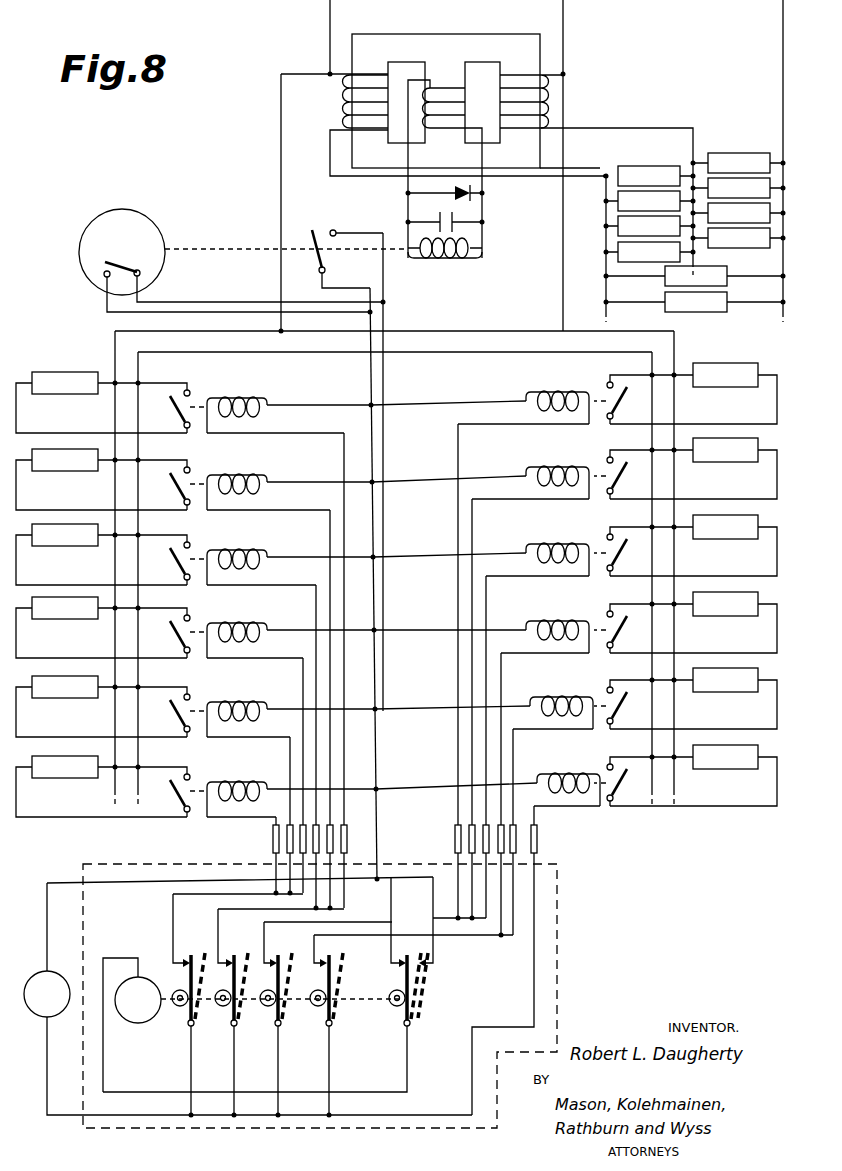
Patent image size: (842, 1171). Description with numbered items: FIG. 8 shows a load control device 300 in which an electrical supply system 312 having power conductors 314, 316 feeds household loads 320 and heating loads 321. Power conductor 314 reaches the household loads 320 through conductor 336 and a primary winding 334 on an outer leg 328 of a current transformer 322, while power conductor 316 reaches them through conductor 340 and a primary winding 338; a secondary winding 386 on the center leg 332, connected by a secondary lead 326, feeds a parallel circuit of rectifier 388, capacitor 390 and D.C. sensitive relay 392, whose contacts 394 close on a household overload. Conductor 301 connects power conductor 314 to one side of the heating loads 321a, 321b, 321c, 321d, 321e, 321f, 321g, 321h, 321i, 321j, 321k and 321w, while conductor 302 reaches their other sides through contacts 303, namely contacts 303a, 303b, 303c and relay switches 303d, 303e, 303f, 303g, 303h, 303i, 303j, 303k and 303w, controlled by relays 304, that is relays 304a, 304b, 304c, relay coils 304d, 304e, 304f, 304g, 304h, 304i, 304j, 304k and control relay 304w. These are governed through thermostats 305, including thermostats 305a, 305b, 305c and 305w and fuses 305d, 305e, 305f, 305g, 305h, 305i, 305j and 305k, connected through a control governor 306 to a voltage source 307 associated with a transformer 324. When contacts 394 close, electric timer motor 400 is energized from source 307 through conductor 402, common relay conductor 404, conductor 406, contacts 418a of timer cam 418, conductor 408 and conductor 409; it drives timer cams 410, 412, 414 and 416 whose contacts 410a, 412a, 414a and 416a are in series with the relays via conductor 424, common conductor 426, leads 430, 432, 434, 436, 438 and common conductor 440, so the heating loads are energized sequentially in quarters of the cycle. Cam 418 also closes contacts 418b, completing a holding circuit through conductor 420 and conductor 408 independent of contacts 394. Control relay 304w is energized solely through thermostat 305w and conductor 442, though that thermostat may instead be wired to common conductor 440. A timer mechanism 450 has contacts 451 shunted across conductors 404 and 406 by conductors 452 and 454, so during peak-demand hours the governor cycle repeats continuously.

The load control device 300 is at (243, 224).
The conductor 301 is at (281, 148).
The conductor 302 is at (565, 297).
The contacts 303 is at (182, 388).
The contacts 303a is at (200, 775).
The contacts 303b is at (200, 695).
The contacts 303c is at (200, 616).
The relay switch 303d is at (200, 543).
The relay switch 303e is at (200, 468).
The relay switch 303f is at (200, 380).
The relay switch 303g is at (600, 384).
The relay switch 303h is at (600, 462).
The relay switch 303i is at (600, 539).
The relay switch 303j is at (600, 616).
The relay switch 303k is at (600, 692).
The relay switch 303w is at (608, 771).
The relays 304 is at (222, 394).
The relay 304a is at (252, 774).
The relay 304b is at (258, 698).
The relay 304c is at (258, 619).
The relay coil 304d is at (262, 548).
The relay coil 304e is at (266, 473).
The relay coil 304f is at (266, 396).
The relay coil 304g is at (546, 390).
The relay coil 304h is at (549, 464).
The relay coil 304i is at (546, 543).
The relay coil 304j is at (546, 619).
The relay coil 304k is at (551, 696).
The control relay 304w is at (568, 773).
The thermostats 305 is at (212, 850).
The thermostat 305a is at (273, 850).
The thermostat 305b is at (286, 838).
The thermostat 305c is at (302, 826).
The fuse 305d is at (318, 826).
The fuse 305e is at (335, 834).
The fuse 305f is at (348, 845).
The fuse 305g is at (454, 834).
The fuse 305h is at (468, 828).
The fuse 305i is at (483, 826).
The fuse 305j is at (504, 826).
The fuse 305k is at (536, 832).
The thermostat 305w is at (539, 848).
The control governor 306 is at (560, 967).
The voltage source 307 is at (46, 970).
The electrical supply system 312 is at (320, 18).
The power conductor 314 is at (330, 44).
The power conductor 316 is at (563, 17).
The household loads 320 is at (734, 140).
The heating loads 321 is at (777, 364).
The heating load 321a is at (84, 782).
The heating load 321b is at (84, 702).
The heating load 321c is at (84, 623).
The heating load 321d is at (84, 550).
The heating load 321e is at (84, 475).
The heating load 321f is at (84, 398).
The heating load 321g is at (746, 392).
The heating load 321h is at (746, 467).
The heating load 321i is at (741, 544).
The heating load 321j is at (741, 621).
The heating load 321k is at (744, 697).
The heating load 321w is at (748, 774).
The current transformer 322 is at (452, 55).
The transformer 324 is at (418, 33).
The secondary lead 326 is at (507, 170).
The outer leg 328 is at (360, 152).
The center leg 332 is at (455, 72).
The primary winding 334 is at (375, 56).
The conductor 336 is at (604, 176).
The primary winding 338 is at (514, 72).
The conductor 340 is at (626, 128).
The secondary winding 386 is at (434, 130).
The rectifier 388 is at (408, 193).
The capacitor 390 is at (482, 222).
The D.C. sensitive relay 392 is at (474, 258).
The contacts 394 is at (325, 226).
The electric timer motor 400 is at (125, 1020).
The conductor 402 is at (47, 886).
The common relay conductor 404 is at (373, 534).
The conductor 406 is at (384, 534).
The conductor 408 is at (394, 1090).
The conductor 409 is at (160, 1115).
The timer cam 410 is at (179, 1008).
The contacts 410a is at (194, 958).
The timer cam 412 is at (221, 1008).
The contacts 412a is at (236, 958).
The timer cam 414 is at (266, 1008).
The contacts 414a is at (280, 958).
The timer cam 416 is at (318, 1008).
The contacts 416a is at (332, 958).
The timer cam 418 is at (396, 1008).
The contacts 418a is at (405, 963).
The contacts 418b is at (432, 960).
The conductor 420 is at (433, 893).
The conductor 424 is at (175, 1062).
The common conductor 426 is at (173, 908).
The lead 430 is at (234, 1068).
The lead 432 is at (218, 918).
The lead 434 is at (278, 1068).
The lead 436 is at (380, 922).
The lead 438 is at (329, 1060).
The common conductor 440 is at (449, 936).
The conductor 442 is at (527, 1027).
The timer mechanism 450 is at (110, 210).
The contacts 451 is at (103, 265).
The conductor 452 is at (268, 284).
The conductor 454 is at (107, 308).